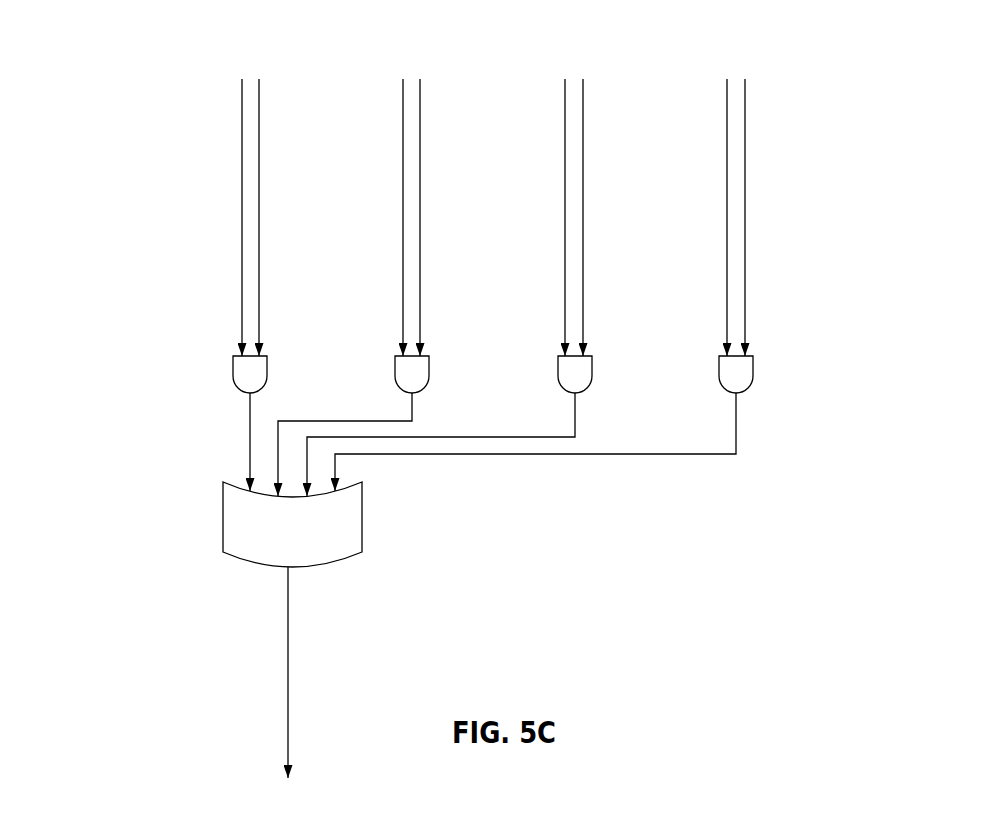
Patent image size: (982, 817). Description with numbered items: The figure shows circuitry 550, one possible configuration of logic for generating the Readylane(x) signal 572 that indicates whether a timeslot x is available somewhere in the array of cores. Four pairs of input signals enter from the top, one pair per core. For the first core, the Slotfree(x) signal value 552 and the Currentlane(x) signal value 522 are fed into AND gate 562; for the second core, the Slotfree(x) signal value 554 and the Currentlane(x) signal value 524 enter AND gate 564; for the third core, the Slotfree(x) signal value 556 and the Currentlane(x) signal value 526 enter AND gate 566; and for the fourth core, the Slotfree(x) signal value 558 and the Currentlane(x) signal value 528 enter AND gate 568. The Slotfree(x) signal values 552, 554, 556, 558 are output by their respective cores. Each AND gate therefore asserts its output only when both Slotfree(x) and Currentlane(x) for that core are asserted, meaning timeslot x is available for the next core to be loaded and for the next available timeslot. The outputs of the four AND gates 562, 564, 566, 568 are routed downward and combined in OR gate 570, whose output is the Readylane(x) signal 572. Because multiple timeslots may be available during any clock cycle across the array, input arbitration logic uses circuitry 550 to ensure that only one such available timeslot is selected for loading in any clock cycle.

The circuitry 550 is at (100, 73).
The Slotfree(x)1 signal value 552 is at (242, 100).
The Currentlane(x)1 signal value 522 is at (259, 100).
The Slotfree(x)2 signal value 554 is at (403, 103).
The Currentlane(x)2 signal value 524 is at (420, 97).
The Slotfree(x)3 signal value 556 is at (565, 103).
The Currentlane(x)3 signal value 526 is at (583, 97).
The Slotfree(x)4 signal value 558 is at (727, 103).
The Currentlane(x)4 signal value 528 is at (745, 97).
The AND gate 562 is at (233, 372).
The AND gate 564 is at (428, 378).
The AND gate 566 is at (591, 378).
The AND gate 568 is at (753, 378).
The OR gate 570 is at (362, 513).
The Readylane(x) signal 572 is at (288, 752).